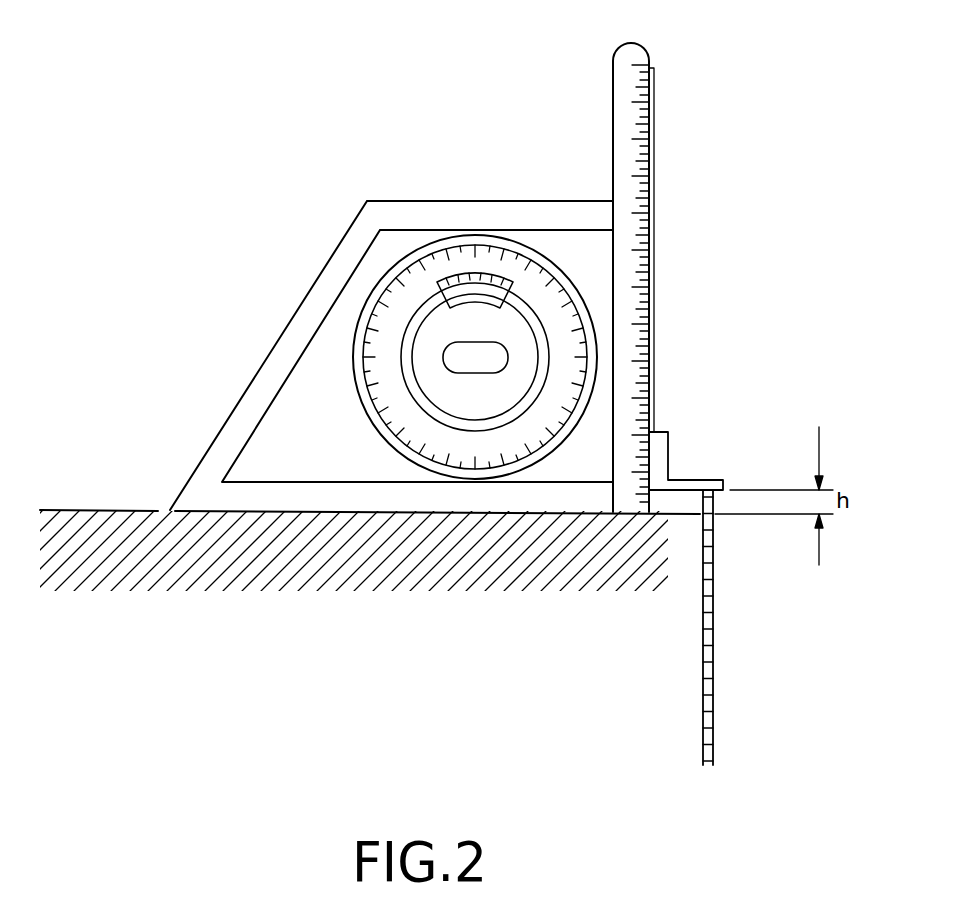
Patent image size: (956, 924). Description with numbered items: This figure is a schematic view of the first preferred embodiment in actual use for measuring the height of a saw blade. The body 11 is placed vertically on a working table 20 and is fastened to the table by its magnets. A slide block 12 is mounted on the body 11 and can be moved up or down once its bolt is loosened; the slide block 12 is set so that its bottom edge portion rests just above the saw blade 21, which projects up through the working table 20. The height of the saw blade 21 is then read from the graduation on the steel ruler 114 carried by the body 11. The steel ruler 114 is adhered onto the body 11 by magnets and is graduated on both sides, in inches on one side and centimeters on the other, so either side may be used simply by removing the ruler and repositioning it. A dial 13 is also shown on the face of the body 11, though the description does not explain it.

The body 11 is at (308, 317).
The slide block 12 is at (658, 453).
The angle dial (graduated scale) 13 is at (458, 250).
The working table 20 is at (385, 560).
The saw blade 21 is at (711, 660).
The steel ruler 114 is at (620, 126).